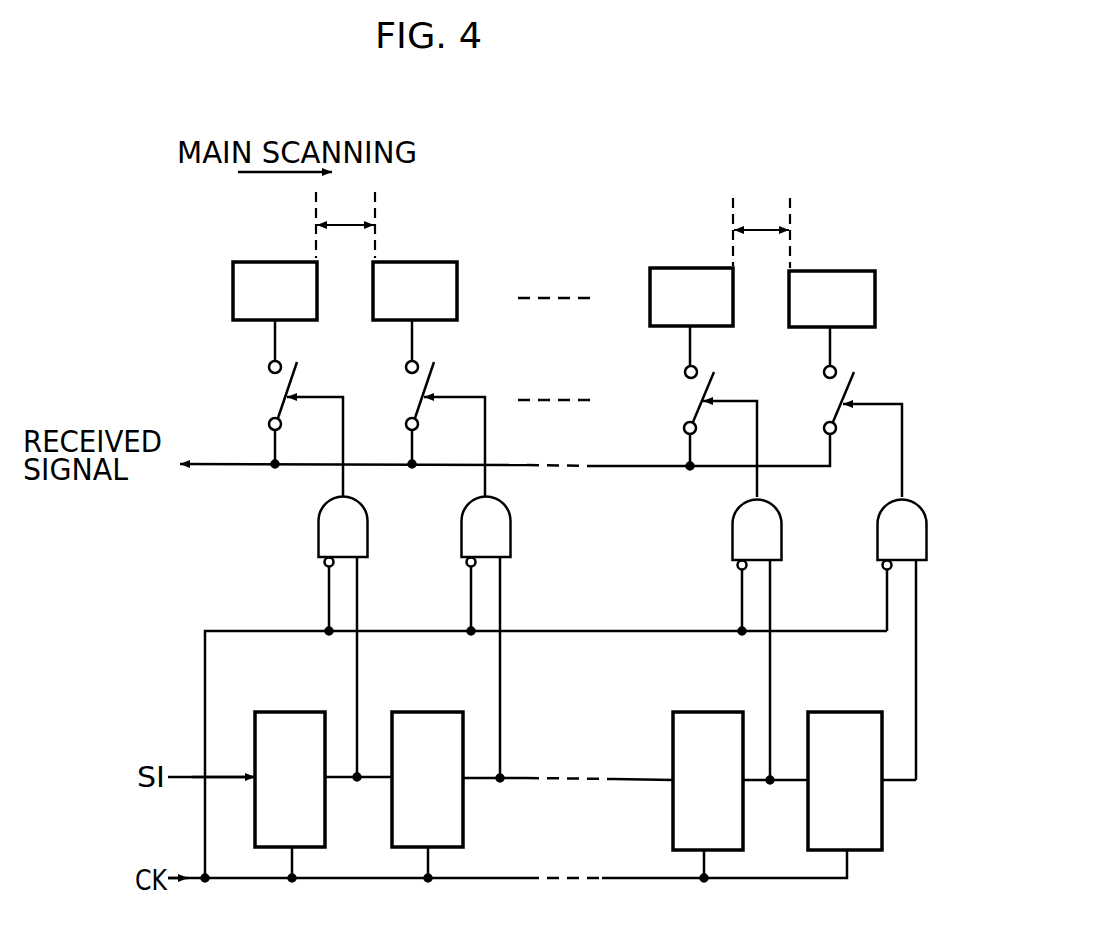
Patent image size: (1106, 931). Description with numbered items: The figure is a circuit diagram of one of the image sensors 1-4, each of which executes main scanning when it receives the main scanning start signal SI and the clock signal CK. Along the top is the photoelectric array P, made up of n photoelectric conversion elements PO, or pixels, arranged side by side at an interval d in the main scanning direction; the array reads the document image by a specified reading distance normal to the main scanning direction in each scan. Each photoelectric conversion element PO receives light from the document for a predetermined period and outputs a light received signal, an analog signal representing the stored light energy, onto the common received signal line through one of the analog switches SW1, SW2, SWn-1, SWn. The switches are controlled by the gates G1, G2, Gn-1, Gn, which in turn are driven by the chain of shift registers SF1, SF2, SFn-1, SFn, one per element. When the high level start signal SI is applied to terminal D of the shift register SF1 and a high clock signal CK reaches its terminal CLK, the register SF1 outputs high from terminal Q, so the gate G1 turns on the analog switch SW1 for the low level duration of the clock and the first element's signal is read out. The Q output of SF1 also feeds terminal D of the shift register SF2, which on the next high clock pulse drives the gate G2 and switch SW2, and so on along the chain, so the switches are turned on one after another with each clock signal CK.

The photoelectric conversion element PO is at (265, 262).
The photoelectric array P is at (399, 260).
The interval d is at (553, 230).
The analog switch SW1 is at (300, 370).
The analog switch SW2 is at (441, 370).
The analog switch SWn-1 is at (716, 378).
The analog switch SWn is at (851, 380).
The gate G1 is at (367, 502).
The gate G2 is at (511, 508).
The gate Gn-1 is at (782, 508).
The gate Gn is at (927, 510).
The shift register SF1 is at (283, 712).
The shift register SF2 is at (430, 712).
The shift register SFn-1 is at (710, 712).
The shift register SFn is at (846, 712).
The image sensors 1-4 is at (1095, 331).